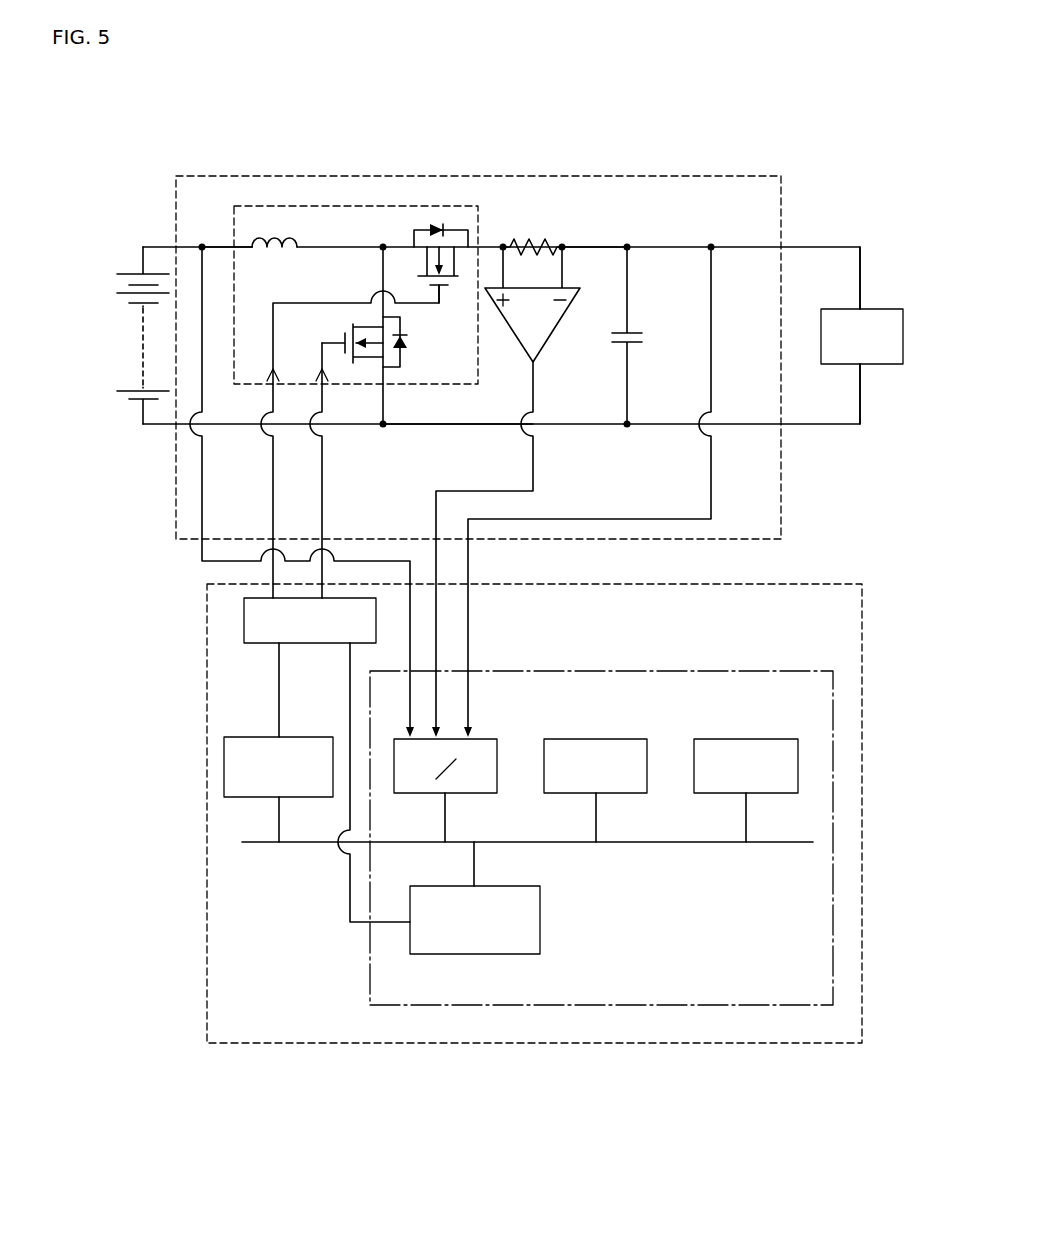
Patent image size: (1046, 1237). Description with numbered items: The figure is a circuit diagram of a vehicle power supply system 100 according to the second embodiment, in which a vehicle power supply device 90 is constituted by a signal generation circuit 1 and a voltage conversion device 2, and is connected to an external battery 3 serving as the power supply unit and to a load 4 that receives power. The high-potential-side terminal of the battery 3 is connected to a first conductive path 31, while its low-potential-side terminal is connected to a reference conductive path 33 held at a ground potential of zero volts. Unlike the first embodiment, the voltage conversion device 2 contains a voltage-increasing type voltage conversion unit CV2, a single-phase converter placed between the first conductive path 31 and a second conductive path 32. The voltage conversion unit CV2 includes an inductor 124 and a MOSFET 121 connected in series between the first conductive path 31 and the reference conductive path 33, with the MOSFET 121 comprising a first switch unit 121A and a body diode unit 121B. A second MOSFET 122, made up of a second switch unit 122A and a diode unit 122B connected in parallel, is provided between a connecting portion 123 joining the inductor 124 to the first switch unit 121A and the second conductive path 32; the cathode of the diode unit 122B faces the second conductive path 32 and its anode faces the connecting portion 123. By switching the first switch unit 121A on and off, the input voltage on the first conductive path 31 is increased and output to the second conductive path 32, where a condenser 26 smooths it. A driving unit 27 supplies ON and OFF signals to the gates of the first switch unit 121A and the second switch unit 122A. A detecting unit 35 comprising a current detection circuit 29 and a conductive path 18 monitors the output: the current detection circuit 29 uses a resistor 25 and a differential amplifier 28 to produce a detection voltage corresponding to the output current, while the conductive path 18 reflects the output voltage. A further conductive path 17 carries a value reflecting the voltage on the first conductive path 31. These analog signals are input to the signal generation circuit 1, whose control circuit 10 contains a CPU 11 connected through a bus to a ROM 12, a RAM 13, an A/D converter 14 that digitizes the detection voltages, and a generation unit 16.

The vehicle power supply system 100 is at (780, 128).
The vehicle power supply device 90 is at (900, 468).
The signal generation circuit 1 is at (818, 584).
The voltage conversion device 2 is at (782, 507).
The battery 3 is at (142, 330).
The load 4 is at (888, 309).
The control circuit 10 is at (718, 671).
The CPU 11 is at (515, 886).
The ROM 12 is at (587, 739).
The RAM 13 is at (720, 739).
The A/D converter 14 is at (482, 739).
The generation unit 16 is at (298, 737).
The conductive path 17 is at (201, 497).
The conductive path 18 is at (710, 354).
The resistor 25 is at (531, 245).
The condenser 26 is at (630, 333).
The driving unit 27 is at (244, 620).
The differential amplifier 28 is at (527, 343).
The current detection circuit 29 is at (517, 463).
The first conductive path 31 is at (221, 246).
The second conductive path 32 is at (606, 247).
The reference conductive path 33 is at (474, 428).
The detecting unit 35 is at (663, 381).
The MOSFET 121 is at (397, 369).
The first switch unit 121A is at (373, 360).
The diode unit 121B is at (404, 343).
The MOSFET 122 is at (490, 237).
The second switch unit 122A is at (445, 289).
The diode unit 122B is at (436, 229).
The connecting portion 123 is at (382, 249).
The inductor 124 is at (268, 240).
The voltage conversion unit CV2 is at (352, 205).